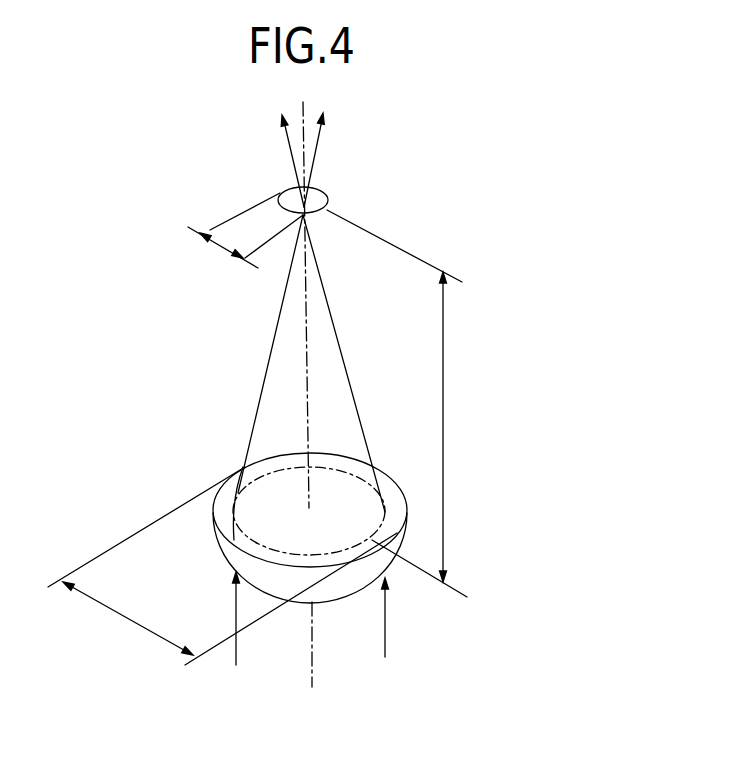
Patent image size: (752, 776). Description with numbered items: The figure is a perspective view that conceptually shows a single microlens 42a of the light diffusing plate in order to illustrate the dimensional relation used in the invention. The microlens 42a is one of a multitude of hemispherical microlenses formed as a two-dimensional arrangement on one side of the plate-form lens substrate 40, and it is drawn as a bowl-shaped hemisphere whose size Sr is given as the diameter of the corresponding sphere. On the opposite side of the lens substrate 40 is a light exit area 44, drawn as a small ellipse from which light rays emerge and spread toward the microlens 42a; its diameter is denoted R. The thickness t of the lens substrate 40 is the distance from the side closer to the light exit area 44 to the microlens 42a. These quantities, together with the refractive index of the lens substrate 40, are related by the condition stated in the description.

The lens substrate 40 is at (268, 538).
The microlens 42a is at (327, 602).
The light exit area 44 is at (331, 224).
The diameter of the light exit area R is at (217, 245).
The thickness of the lens substrate t is at (443, 422).
The size of the microlens Sr is at (122, 618).